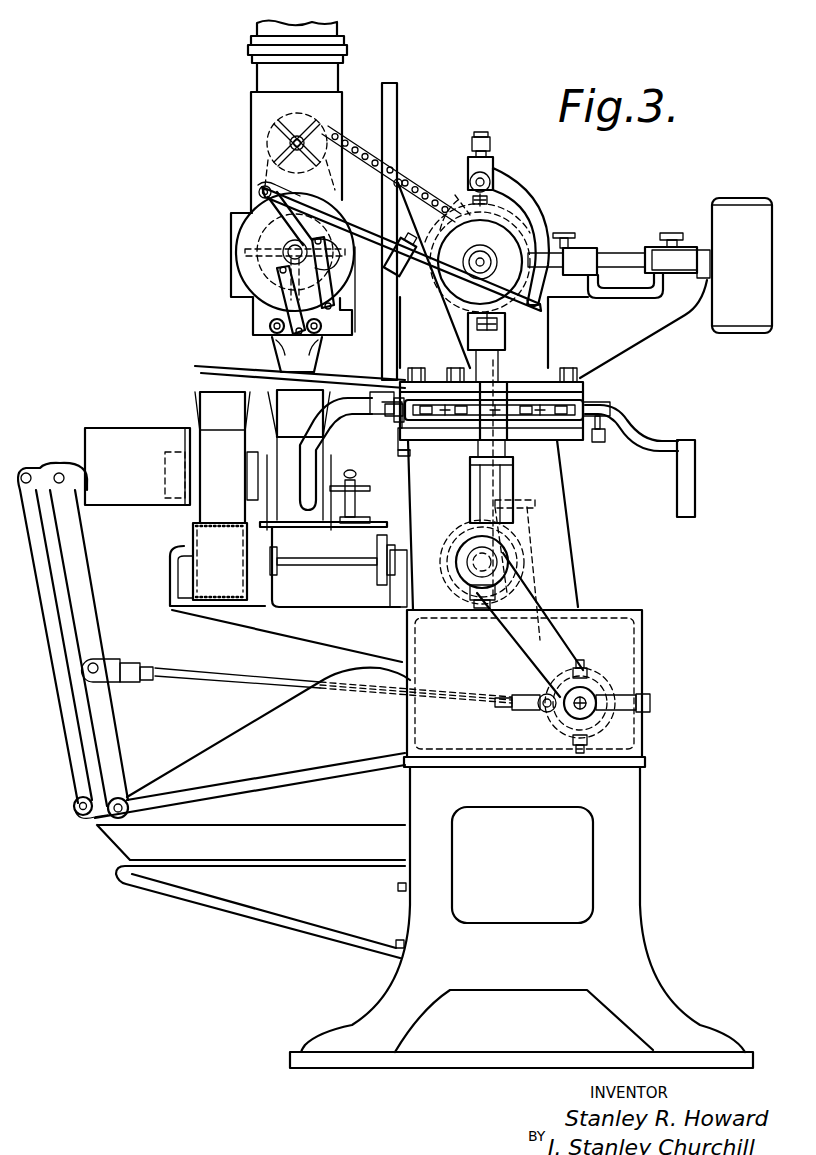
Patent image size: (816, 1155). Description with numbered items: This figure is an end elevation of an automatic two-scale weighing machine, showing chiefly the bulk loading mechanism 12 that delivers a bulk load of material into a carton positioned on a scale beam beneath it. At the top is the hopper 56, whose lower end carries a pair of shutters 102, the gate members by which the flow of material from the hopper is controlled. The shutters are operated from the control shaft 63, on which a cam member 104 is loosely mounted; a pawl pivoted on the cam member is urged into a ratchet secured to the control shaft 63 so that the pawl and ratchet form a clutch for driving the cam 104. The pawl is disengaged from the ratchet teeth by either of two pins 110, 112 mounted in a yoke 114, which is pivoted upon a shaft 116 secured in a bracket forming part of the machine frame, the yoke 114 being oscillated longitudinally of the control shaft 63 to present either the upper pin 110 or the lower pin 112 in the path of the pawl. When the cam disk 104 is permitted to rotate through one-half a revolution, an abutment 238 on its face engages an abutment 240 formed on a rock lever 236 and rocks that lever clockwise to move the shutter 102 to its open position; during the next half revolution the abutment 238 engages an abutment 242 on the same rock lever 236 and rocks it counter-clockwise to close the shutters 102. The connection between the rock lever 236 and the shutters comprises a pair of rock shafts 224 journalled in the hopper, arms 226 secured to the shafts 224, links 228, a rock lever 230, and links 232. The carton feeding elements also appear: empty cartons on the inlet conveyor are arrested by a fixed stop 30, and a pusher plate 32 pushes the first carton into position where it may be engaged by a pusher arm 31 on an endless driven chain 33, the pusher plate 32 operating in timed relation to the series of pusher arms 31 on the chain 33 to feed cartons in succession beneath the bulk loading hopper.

The bulk loading mechanism 12 is at (209, 126).
The hopper 56 is at (248, 218).
The links 232 is at (343, 207).
The abutment 238 is at (400, 206).
The cam member 104 is at (452, 178).
The abutment 240 is at (465, 195).
The pin 110 is at (495, 185).
The control shaft 63 is at (488, 260).
The yoke 114 is at (578, 248).
The shaft 116 is at (580, 256).
The rock lever 230 is at (270, 238).
The links 228 is at (285, 285).
The arms 226 is at (280, 318).
The rock shafts 224 is at (272, 327).
The shutters 102 is at (284, 342).
The abutment 242 is at (448, 316).
The rock lever 236 is at (538, 304).
The pin 112 is at (503, 337).
The pusher plate 32 is at (174, 435).
The fixed stop 30 is at (165, 468).
The pusher arm 31 is at (303, 476).
The endless driven chain 33 is at (548, 425).